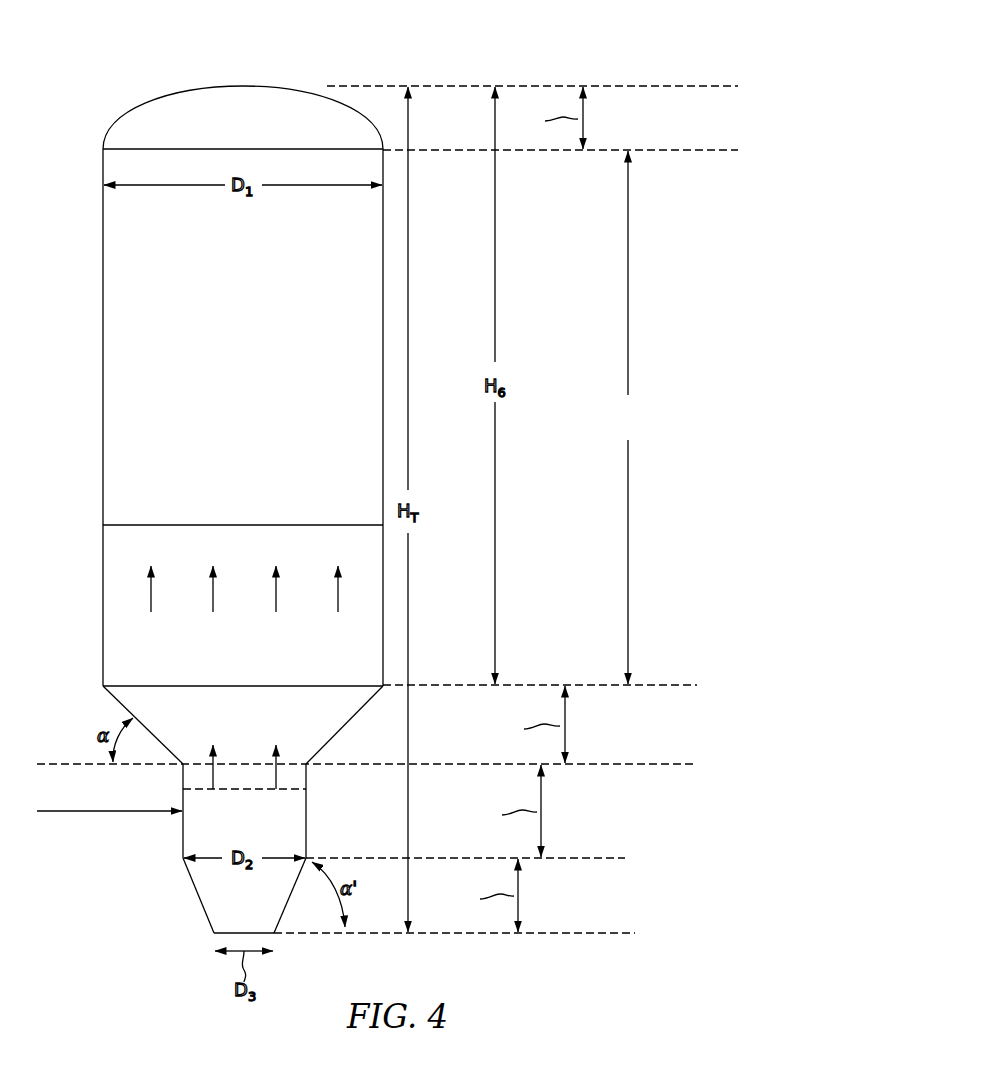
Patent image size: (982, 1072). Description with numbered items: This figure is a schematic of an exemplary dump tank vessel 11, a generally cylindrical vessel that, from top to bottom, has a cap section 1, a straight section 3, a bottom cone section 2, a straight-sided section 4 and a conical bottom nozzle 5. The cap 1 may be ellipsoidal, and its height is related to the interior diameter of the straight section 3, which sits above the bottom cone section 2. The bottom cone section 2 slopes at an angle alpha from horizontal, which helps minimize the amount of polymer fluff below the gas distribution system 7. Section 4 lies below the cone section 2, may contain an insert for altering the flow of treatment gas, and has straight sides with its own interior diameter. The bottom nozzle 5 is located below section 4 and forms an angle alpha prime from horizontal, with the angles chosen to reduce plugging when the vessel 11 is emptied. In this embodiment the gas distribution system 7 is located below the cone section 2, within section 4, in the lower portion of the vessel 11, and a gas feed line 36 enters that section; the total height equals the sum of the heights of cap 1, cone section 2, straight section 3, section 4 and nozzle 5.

The dump tank vessel 11 is at (107, 47).
The cap section 1 is at (590, 88).
The bottom cone section 2 is at (577, 688).
The straight section 3 is at (658, 152).
The section 4 is at (553, 767).
The bottom nozzle 5 is at (530, 861).
The gas distribution system 7 is at (252, 790).
The feed inlet 36 is at (116, 815).